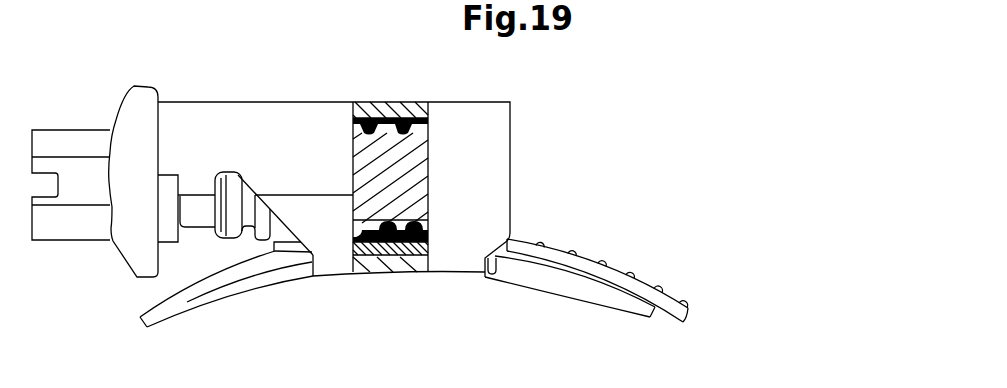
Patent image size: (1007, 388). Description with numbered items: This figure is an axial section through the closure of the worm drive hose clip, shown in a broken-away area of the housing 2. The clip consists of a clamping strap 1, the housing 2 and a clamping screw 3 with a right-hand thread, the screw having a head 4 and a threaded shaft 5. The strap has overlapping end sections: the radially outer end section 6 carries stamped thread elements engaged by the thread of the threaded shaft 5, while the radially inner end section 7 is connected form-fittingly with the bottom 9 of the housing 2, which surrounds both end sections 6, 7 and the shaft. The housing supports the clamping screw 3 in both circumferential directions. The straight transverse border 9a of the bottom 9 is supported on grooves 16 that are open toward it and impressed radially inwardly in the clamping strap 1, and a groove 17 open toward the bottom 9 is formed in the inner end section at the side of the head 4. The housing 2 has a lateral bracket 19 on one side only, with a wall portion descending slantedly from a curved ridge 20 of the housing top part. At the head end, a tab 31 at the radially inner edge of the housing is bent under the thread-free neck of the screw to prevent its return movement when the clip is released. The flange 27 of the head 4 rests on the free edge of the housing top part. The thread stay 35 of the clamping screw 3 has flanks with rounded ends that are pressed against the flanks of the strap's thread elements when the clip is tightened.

The clamping strap 1 is at (618, 306).
The housing 2 is at (280, 95).
The clamping screw 3 is at (96, 98).
The head 4 is at (68, 242).
The threaded shaft 5 is at (418, 157).
The radially outer end section 6 is at (612, 273).
The radially inner end section 7 is at (235, 272).
The bottom 9 is at (388, 258).
The transverse border 9a is at (493, 270).
The grooves 16 is at (524, 287).
The groove 17 is at (273, 288).
The lateral bracket 19 is at (320, 227).
The curved ridge 20 is at (402, 111).
The flange 27 is at (137, 86).
The tab 31 is at (188, 210).
The thread stay 35 is at (376, 113).